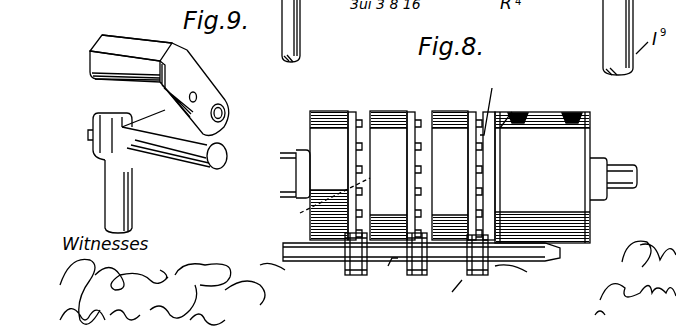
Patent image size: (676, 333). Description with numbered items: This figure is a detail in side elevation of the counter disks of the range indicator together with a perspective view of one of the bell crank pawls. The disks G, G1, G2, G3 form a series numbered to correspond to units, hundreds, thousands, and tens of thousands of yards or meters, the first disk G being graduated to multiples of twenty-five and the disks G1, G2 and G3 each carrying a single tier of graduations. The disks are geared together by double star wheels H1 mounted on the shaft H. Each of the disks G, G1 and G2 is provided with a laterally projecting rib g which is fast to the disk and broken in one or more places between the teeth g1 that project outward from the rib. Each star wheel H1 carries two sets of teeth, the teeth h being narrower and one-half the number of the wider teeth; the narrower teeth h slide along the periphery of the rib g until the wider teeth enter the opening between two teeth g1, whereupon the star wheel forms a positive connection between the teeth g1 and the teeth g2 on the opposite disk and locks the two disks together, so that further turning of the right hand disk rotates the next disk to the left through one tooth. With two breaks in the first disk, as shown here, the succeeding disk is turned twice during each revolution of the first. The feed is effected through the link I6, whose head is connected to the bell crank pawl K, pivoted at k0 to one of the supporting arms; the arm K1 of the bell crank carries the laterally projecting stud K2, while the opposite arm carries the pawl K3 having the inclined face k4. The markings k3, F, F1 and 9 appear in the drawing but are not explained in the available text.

In FIG. 9, the block end k3 is at (95, 67).
In FIG. 9, the inclined face k4 is at (128, 45).
In FIG. 9, the pawl K3 is at (190, 67).
In FIG. 9, the bell crank pawl K is at (207, 92).
In FIG. 9, the pivot k0 is at (223, 117).
In FIG. 9, the arm of the bell crank K1 is at (207, 135).
In FIG. 9, the laterally projecting stud K2 is at (185, 158).
In FIG. 9, the link I6 is at (134, 200).
In FIG. 8, the shaft stub F is at (295, 174).
In FIG. 8, the shaft F1 is at (637, 167).
In FIG. 8, the disk G is at (541, 112).
In FIG. 8, the disk G1 is at (455, 111).
In FIG. 8, the disk G2 is at (395, 111).
In FIG. 8, the disk G3 is at (338, 111).
In FIG. 8, the laterally projecting rib g is at (502, 124).
In FIG. 8, the teeth g1 is at (493, 115).
In FIG. 8, the teeth g2 is at (357, 132).
In FIG. 8, the line 9 is at (327, 207).
In FIG. 8, the shaft H is at (542, 242).
In FIG. 8, the double star wheel H1 is at (479, 276).
In FIG. 8, the teeth h is at (462, 290).